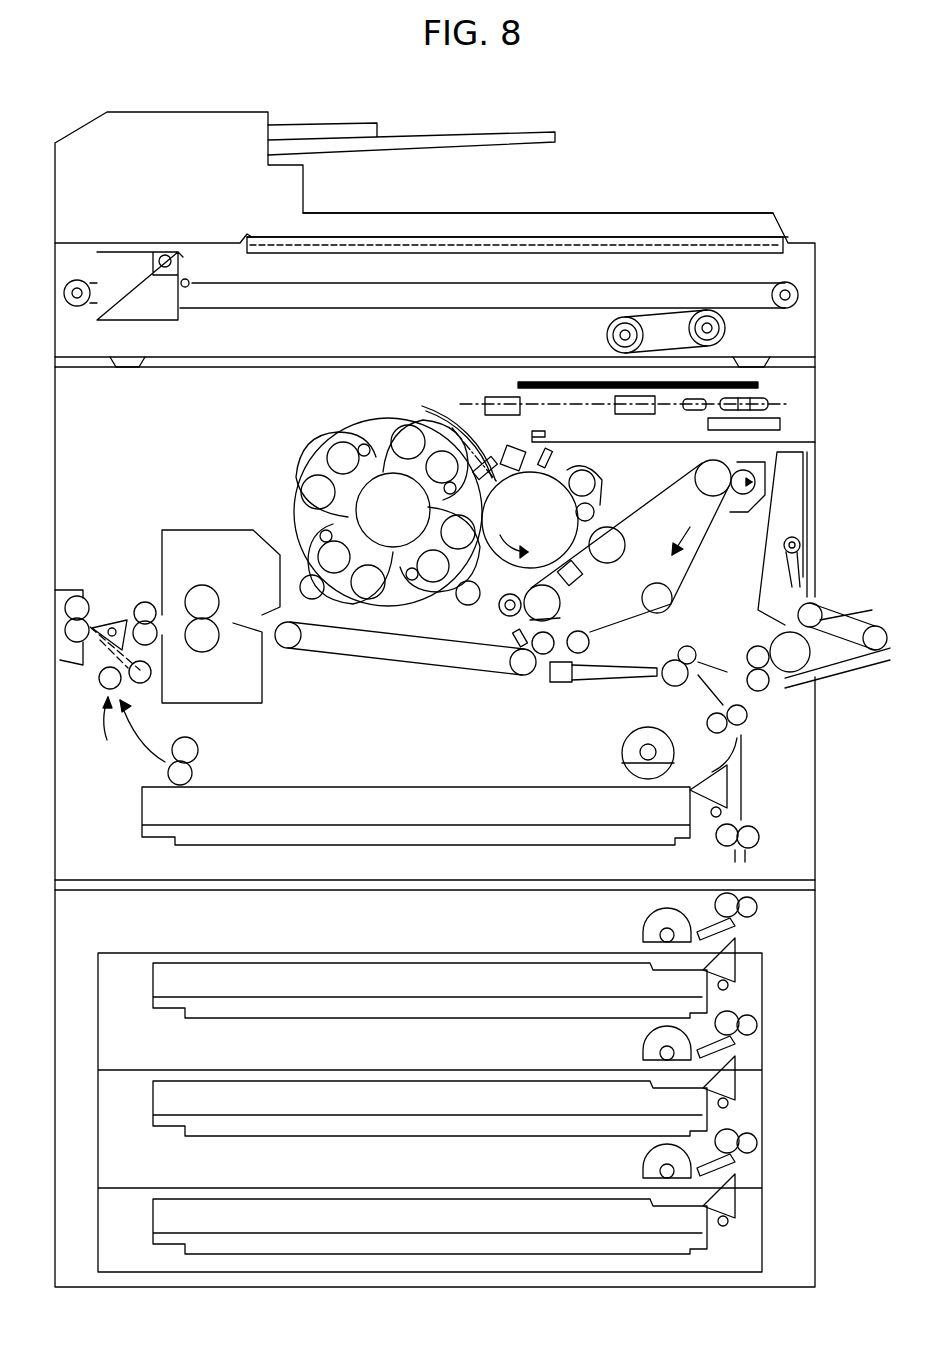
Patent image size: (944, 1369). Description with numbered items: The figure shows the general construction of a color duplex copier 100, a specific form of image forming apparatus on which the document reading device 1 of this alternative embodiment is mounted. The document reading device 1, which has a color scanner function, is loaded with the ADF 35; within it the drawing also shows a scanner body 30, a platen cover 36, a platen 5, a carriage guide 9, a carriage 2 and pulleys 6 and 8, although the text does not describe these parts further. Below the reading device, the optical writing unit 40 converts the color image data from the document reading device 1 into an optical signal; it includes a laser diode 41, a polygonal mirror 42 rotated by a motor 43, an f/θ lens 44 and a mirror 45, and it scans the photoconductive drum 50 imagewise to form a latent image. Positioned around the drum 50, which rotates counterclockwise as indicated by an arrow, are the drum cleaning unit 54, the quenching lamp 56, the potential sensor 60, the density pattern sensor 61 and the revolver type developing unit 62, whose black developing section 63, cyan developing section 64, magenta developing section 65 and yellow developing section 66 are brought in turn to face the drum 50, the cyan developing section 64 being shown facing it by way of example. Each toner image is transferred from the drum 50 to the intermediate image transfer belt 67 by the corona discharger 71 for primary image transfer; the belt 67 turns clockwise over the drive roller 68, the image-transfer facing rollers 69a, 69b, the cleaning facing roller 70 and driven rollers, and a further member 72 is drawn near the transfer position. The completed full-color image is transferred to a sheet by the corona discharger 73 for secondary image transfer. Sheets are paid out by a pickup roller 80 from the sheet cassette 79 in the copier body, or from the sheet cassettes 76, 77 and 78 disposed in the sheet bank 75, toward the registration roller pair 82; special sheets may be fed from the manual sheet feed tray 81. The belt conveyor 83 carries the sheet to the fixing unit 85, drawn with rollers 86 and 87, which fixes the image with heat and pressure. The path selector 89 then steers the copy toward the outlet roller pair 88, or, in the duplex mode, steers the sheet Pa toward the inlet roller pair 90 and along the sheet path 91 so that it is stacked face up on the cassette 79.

The color duplex copier 100 is at (792, 136).
The ADF 35 is at (200, 97).
The document reading device 1 is at (826, 282).
The scanner unit 30 is at (430, 236).
The platen cover 36 is at (668, 213).
The platen glass 5 is at (552, 237).
The carriage guide 9 is at (690, 283).
The lamp carriage 2 is at (175, 328).
The drive pulley 6 is at (607, 335).
The drive pulley 8 is at (725, 331).
The optical writing unit 40 is at (826, 368).
The mirror 45 is at (468, 396).
The f/θ lens 44 is at (646, 415).
The laser diode 41 is at (692, 411).
The polygonal mirror 42 is at (770, 404).
The motor 43 is at (781, 424).
The revolver type developing unit 62 is at (345, 506).
The yellow developing section 66 is at (290, 470).
The magenta developing section 65 is at (345, 600).
The cyan developing section 64 is at (432, 585).
The density pattern sensor 61 is at (497, 588).
The black developing section 63 is at (420, 410).
The potential sensor 60 is at (450, 405).
The quenching lamp 56 is at (549, 450).
The photoconductive drum 50 is at (530, 520).
The drum cleaning unit 54 is at (605, 488).
The intermediate image transfer belt 67 is at (690, 565).
The drive roller 68 is at (700, 492).
The cleaning facing roller 70 is at (562, 606).
The corona discharger for primary image transfer 71 is at (582, 578).
The image-transfer facing roller 69a is at (592, 644).
The image-transfer facing roller 69b is at (540, 658).
The transfer guide 72 is at (508, 652).
The corona discharger for secondary image transfer 73 is at (562, 682).
The belt conveyor 83 is at (400, 661).
The registration roller pair 82 is at (676, 686).
The manual sheet feed tray 81 is at (848, 672).
The outlet roller pair 88 is at (88, 600).
The path selector 89 is at (112, 620).
The sheet Pa is at (106, 685).
The inlet roller pair 90 is at (101, 732).
The sheet path 91 is at (152, 773).
The fixing unit 85 is at (221, 652).
The duplex roller 86 is at (208, 585).
The duplex roller 87 is at (208, 652).
The sheet cassette 79 is at (428, 787).
The pickup roller 80 is at (622, 755).
The sheet bank 75 is at (826, 1027).
The sheet cassette 76 is at (428, 963).
The sheet cassette 77 is at (428, 1081).
The sheet cassette 78 is at (428, 1199).